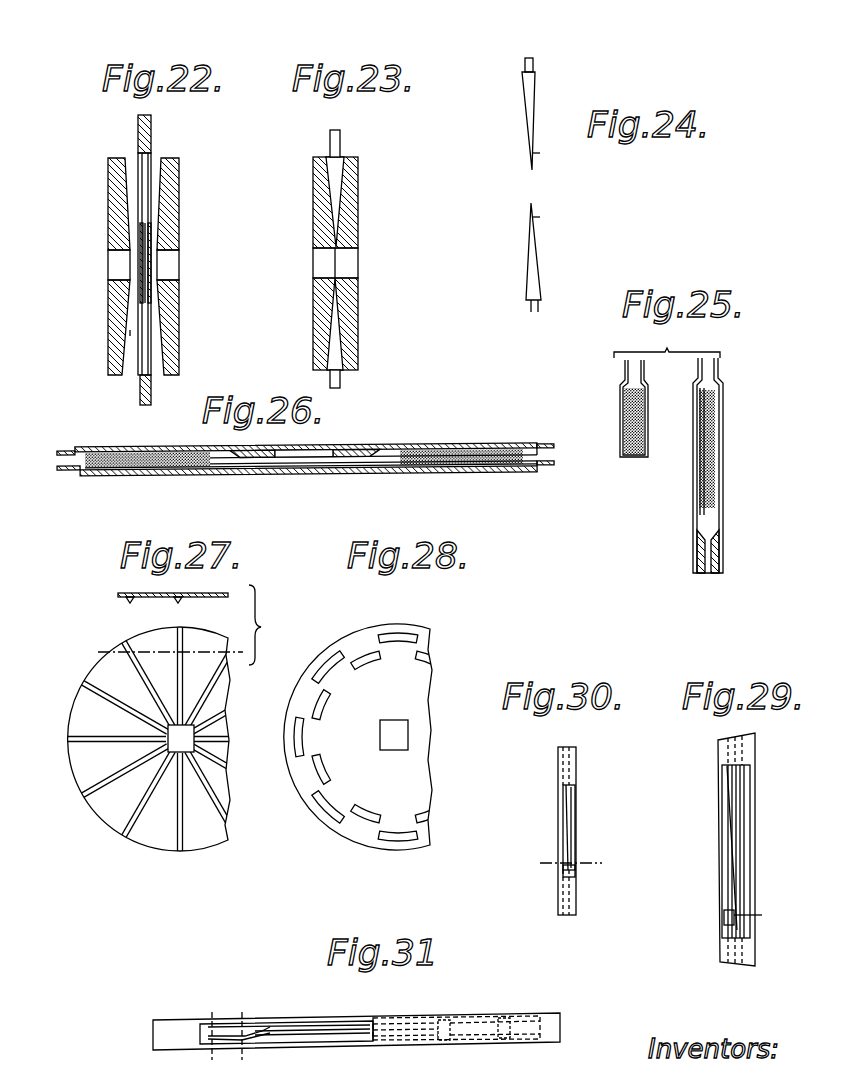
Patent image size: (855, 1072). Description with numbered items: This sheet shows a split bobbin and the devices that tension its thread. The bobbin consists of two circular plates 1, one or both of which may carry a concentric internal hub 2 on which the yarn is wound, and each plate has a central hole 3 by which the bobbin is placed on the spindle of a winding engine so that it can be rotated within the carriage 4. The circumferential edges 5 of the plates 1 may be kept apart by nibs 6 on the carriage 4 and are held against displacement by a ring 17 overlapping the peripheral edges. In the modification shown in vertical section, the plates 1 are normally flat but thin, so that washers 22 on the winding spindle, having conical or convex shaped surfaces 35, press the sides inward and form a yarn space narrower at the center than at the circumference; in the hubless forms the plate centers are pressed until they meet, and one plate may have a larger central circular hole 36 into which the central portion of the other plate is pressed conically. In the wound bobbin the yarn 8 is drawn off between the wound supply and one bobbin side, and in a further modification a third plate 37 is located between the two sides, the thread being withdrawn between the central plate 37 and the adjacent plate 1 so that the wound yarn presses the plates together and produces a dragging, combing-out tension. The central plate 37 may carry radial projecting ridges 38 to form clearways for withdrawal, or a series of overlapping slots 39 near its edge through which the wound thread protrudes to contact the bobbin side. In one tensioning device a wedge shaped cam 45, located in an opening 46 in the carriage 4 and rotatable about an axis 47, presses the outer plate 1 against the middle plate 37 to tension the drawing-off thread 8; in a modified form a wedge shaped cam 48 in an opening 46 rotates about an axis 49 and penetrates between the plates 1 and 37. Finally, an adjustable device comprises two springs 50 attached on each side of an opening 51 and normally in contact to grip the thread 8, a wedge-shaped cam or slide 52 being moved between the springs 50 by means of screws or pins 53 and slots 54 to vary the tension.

In FIG. 22, the bobbin plates 1 is at (142, 178).
In FIG. 23, the bobbin plates 1 is at (330, 190).
In FIG. 24, the bobbin plates 1 is at (530, 112).
In FIG. 25, the bobbin plates 1 is at (622, 432).
In FIG. 26, the bobbin plates 1 is at (440, 447).
In FIG. 30, the bobbin plates 1 is at (563, 802).
In FIG. 29, the bobbin plates 1 is at (724, 780).
In FIG. 22, the hub 2 is at (143, 236).
In FIG. 25, the hub 2 is at (715, 537).
In FIG. 26, the hub 2 is at (376, 448).
In FIG. 22, the hole 3 is at (141, 267).
In FIG. 24, the hole 3 is at (527, 178).
In FIG. 26, the hole 3 is at (308, 457).
In FIG. 27, the hole 3 is at (181, 738).
In FIG. 28, the hole 3 is at (394, 735).
In FIG. 22, the carriage 4 is at (152, 120).
In FIG. 30, the carriage 4 is at (558, 762).
In FIG. 29, the carriage 4 is at (718, 745).
In FIG. 31, the carriage 4 is at (558, 1026).
In FIG. 23, the circumferential edges 5 is at (340, 133).
In FIG. 24, the circumferential edges 5 is at (532, 56).
In FIG. 26, the circumferential edges 5 is at (545, 445).
In FIG. 22, the nibs 6 is at (138, 155).
In FIG. 25, the yarn 8 is at (627, 372).
In FIG. 26, the yarn 8 is at (55, 466).
In FIG. 29, the yarn 8 is at (737, 934).
In FIG. 31, the yarn 8 is at (292, 1031).
In FIG. 22, the ring 17 is at (151, 138).
In FIG. 22, the washers 22 is at (110, 207).
In FIG. 23, the washers 22 is at (320, 230).
In FIG. 22, the shaped surfaces 35 is at (160, 333).
In FIG. 23, the shaped surfaces 35 is at (335, 329).
In FIG. 24, the central circular hole 36 is at (550, 187).
In FIG. 26, the third plate 37 is at (116, 474).
In FIG. 27, the third plate 37 is at (149, 739).
In FIG. 28, the third plate 37 is at (358, 737).
In FIG. 30, the third plate 37 is at (563, 828).
In FIG. 29, the third plate 37 is at (742, 824).
In FIG. 27, the radial projecting ridges 38 is at (178, 603).
In FIG. 28, the overlapping slots 39 is at (366, 651).
In FIG. 29, the wedge shaped cam 45 is at (733, 868).
In FIG. 30, the opening 46 is at (576, 779).
In FIG. 29, the opening 46 is at (750, 763).
In FIG. 29, the axis 47 is at (720, 906).
In FIG. 30, the wedge shaped cam 48 is at (565, 860).
In FIG. 30, the axis 49 is at (554, 873).
In FIG. 31, the springs 50 is at (255, 1030).
In FIG. 31, the opening 51 is at (330, 1026).
In FIG. 31, the cam or slide 52 is at (374, 1022).
In FIG. 31, the screws or pins 53 is at (512, 1018).
In FIG. 31, the slots 54 is at (450, 1022).